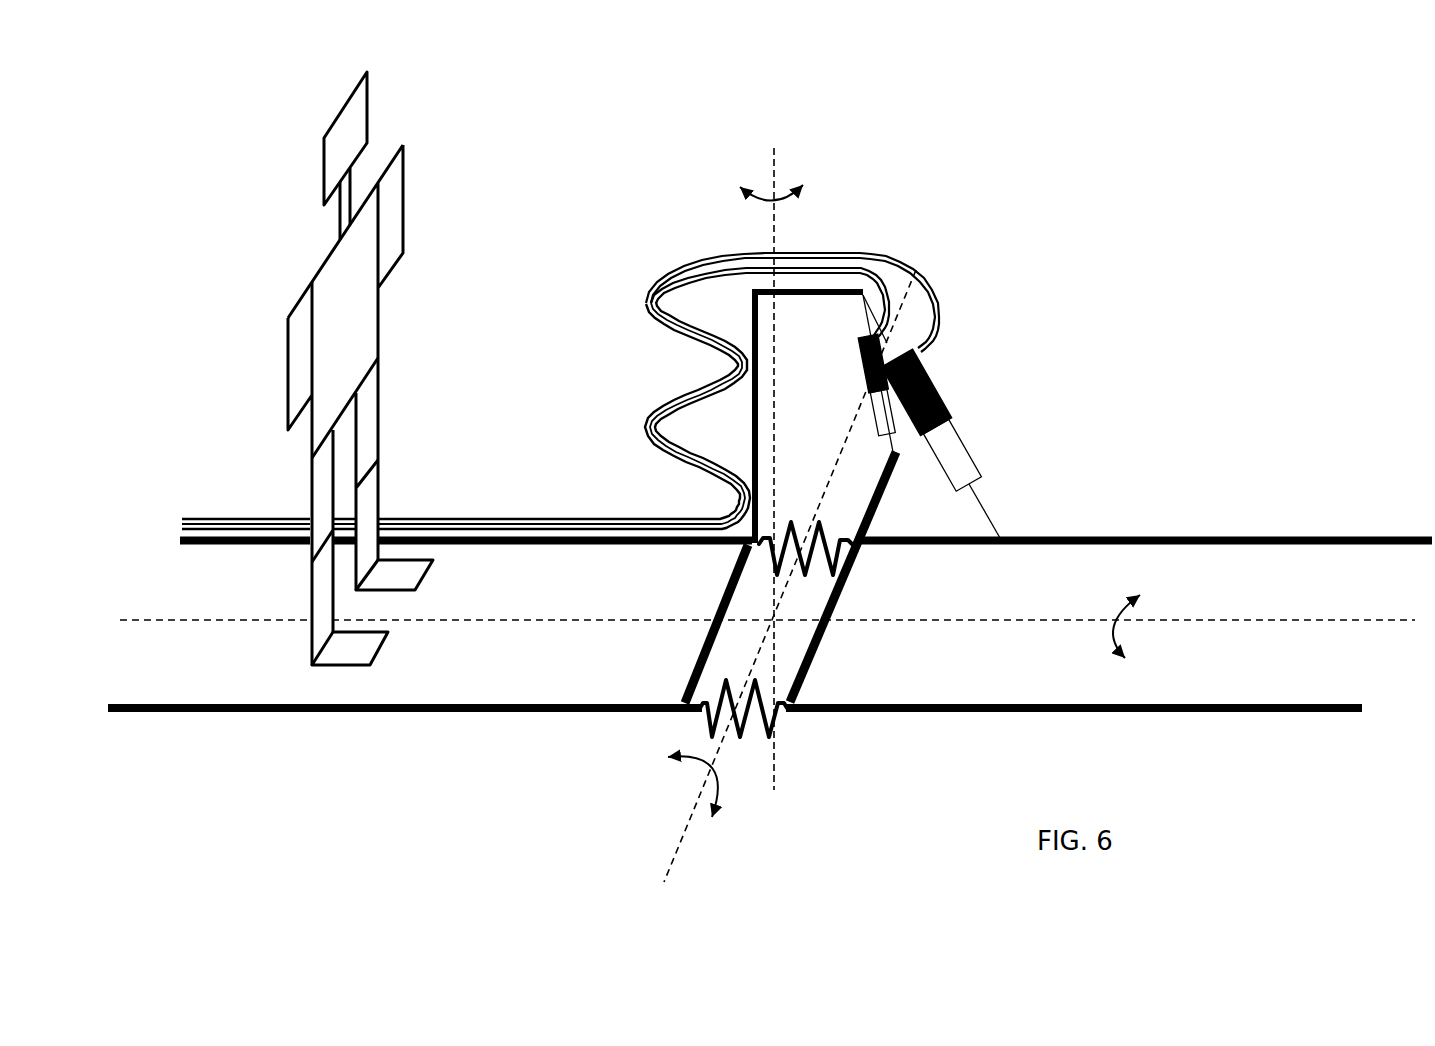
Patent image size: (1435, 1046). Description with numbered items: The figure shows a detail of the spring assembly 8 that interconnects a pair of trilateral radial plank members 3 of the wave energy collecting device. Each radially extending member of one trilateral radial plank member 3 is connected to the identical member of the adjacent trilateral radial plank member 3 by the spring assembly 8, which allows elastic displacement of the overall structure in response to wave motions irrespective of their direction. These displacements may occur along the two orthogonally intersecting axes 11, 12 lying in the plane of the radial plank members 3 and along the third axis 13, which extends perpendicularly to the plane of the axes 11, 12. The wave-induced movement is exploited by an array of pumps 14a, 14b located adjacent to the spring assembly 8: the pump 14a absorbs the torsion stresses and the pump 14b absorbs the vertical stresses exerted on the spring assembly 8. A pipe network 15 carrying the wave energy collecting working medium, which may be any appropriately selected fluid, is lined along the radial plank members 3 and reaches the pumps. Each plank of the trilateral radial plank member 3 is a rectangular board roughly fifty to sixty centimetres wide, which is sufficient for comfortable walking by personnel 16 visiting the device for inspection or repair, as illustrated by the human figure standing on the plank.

The trilateral radial plank member 3 is at (1163, 536).
The spring assembly 8 is at (743, 730).
The axis 11 is at (162, 610).
The axis 12 is at (698, 843).
The axis 13 is at (765, 177).
The pump 14a is at (887, 342).
The pump 14b is at (960, 440).
The pipe network 15 is at (668, 327).
The personnel 16 is at (418, 219).